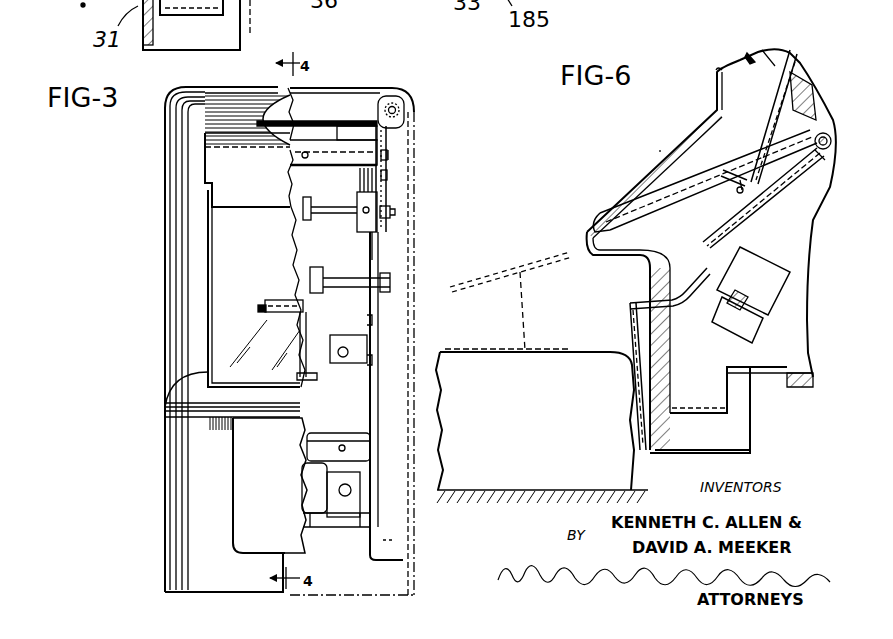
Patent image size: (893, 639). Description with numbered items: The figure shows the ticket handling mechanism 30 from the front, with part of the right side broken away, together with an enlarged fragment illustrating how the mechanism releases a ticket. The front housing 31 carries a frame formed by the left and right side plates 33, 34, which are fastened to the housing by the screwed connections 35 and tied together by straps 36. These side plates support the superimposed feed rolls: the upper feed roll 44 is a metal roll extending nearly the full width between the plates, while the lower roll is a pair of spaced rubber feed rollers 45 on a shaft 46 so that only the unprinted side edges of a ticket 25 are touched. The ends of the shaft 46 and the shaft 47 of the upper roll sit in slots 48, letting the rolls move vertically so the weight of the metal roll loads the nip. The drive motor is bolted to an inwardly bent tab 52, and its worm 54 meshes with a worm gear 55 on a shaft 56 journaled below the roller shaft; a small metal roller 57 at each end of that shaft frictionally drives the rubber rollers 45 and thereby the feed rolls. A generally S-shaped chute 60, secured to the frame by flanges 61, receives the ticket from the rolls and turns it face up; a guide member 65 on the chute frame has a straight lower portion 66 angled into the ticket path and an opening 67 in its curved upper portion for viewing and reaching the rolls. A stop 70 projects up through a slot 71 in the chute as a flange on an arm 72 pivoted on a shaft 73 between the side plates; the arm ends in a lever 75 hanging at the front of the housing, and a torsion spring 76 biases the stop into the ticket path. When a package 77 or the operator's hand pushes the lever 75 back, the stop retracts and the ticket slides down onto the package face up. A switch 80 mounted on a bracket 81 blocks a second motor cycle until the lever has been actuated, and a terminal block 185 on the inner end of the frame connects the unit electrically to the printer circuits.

In FIG. 6, the printed ticket 25 is at (762, 50).
In FIG. 3, the ticket handling mechanism 30 is at (156, 242).
In FIG. 6, the ticket handling mechanism 30 is at (658, 148).
In FIG. 3, the front housing 31 is at (188, 315).
In FIG. 6, the front housing 31 is at (717, 73).
In FIG. 6, the left side plate 33 is at (760, 353).
In FIG. 3, the right side plate 34 is at (383, 237).
In FIG. 3, the screwed connections 35 is at (383, 537).
In FIG. 3, the straps 36 is at (317, 117).
In FIG. 6, the straps 36 is at (807, 387).
In FIG. 3, the upper feed roll 44 is at (327, 140).
In FIG. 3, the rubber feed rollers 45 is at (390, 174).
In FIG. 3, the shaft of rubber rollers 46 is at (290, 180).
In FIG. 3, the shaft of upper roller 47 is at (387, 168).
In FIG. 3, the slots 48 is at (389, 172).
In FIG. 3, the tab 52 is at (360, 348).
In FIG. 6, the worm 54 is at (815, 83).
In FIG. 3, the worm gear 55 is at (311, 220).
In FIG. 3, the shaft of worm gear 56 is at (392, 212).
In FIG. 3, the small metal roller 57 is at (367, 200).
In FIG. 3, the chute 60 is at (230, 233).
In FIG. 6, the chute 60 is at (783, 130).
In FIG. 3, the flanges 61 is at (373, 305).
In FIG. 6, the flanges 61 is at (660, 230).
In FIG. 3, the guide member 65 is at (220, 97).
In FIG. 3, the lower portion of guide member 66 is at (240, 193).
In FIG. 6, the lower portion of guide member 66 is at (750, 57).
In FIG. 3, the opening 67 is at (257, 128).
In FIG. 3, the stop 70 is at (277, 300).
In FIG. 6, the stop 70 is at (733, 173).
In FIG. 3, the slot 71 is at (260, 308).
In FIG. 6, the slot 71 is at (736, 173).
In FIG. 3, the arm 72 is at (307, 393).
In FIG. 6, the arm 72 is at (773, 193).
In FIG. 3, the shaft 73 is at (357, 277).
In FIG. 3, the lever 75 is at (270, 485).
In FIG. 6, the lever 75 is at (630, 330).
In FIG. 6, the torsion spring 76 is at (807, 163).
In FIG. 6, the package 77 is at (542, 426).
In FIG. 6, the switch 80 is at (760, 280).
In FIG. 3, the bracket 81 is at (343, 434).
In FIG. 6, the bracket 81 is at (760, 322).
In FIG. 3, the terminal block 185 is at (307, 473).